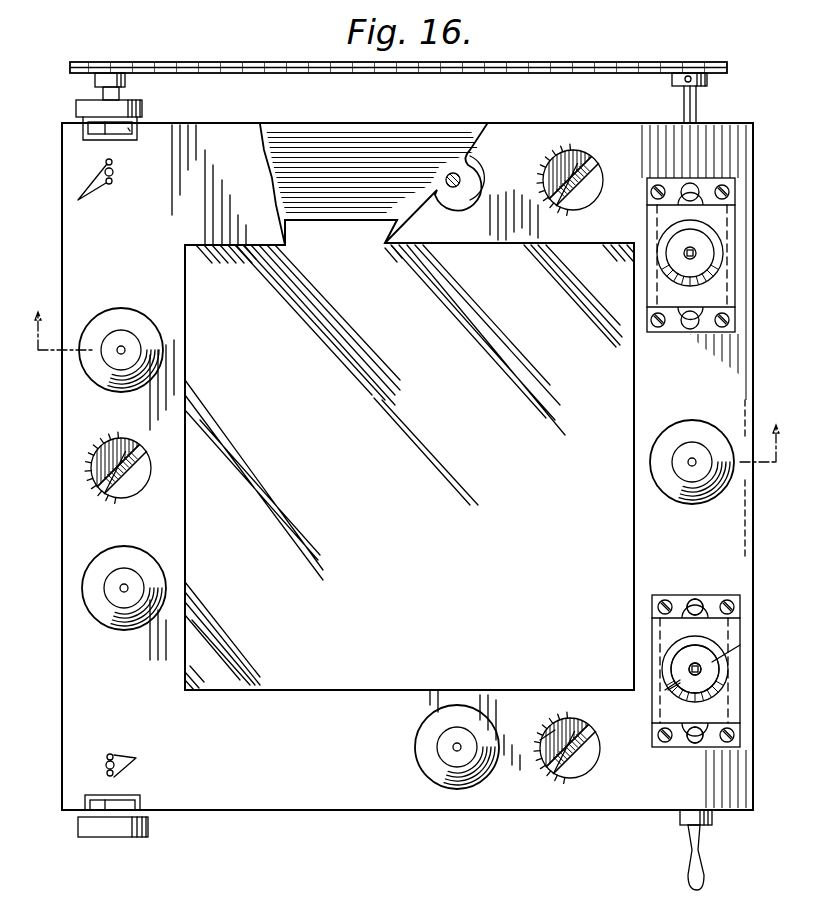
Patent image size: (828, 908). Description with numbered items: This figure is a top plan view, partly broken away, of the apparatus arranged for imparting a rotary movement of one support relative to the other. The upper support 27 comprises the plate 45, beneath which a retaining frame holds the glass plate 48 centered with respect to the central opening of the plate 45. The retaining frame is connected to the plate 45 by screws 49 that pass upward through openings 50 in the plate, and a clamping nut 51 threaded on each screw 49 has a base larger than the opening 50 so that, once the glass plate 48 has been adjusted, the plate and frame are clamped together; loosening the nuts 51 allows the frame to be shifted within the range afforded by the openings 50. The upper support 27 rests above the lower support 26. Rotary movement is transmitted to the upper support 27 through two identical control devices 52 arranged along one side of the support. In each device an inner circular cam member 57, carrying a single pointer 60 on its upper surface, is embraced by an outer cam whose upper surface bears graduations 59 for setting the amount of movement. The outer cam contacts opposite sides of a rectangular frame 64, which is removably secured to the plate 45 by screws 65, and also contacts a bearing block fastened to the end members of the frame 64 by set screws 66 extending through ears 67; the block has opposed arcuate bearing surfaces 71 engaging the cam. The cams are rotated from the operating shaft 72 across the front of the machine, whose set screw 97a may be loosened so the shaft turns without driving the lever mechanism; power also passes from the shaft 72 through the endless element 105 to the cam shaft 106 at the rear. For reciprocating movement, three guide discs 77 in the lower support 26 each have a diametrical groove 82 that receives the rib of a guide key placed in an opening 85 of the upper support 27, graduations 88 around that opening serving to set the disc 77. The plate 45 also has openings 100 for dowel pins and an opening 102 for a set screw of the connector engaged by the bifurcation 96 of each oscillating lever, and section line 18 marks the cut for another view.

The endless element 105 is at (572, 62).
The cam shaft 106 is at (132, 82).
The bifurcation 96 is at (135, 128).
The opening 102 is at (114, 176).
The openings 100 is at (128, 470).
The lower support 26 is at (377, 119).
The upper support 27 is at (520, 137).
The glass plate 48 is at (350, 240).
The screws 49 is at (455, 188).
The openings 50 is at (472, 184).
The groove 82 is at (128, 440).
The guide disc 77 is at (140, 488).
The opening 85 is at (125, 500).
The operating shaft 72 is at (684, 100).
The set screw 97a is at (708, 80).
The control devices 52 is at (642, 283).
The clamping nut 51 is at (135, 318).
The section line 18 is at (403, 403).
The inner circular cam member 57 is at (688, 648).
The graduations 59 is at (672, 673).
The pointer 60 is at (700, 682).
The rectangular frame 64 is at (670, 690).
The screws 65 is at (663, 600).
The set screws 66 is at (696, 599).
The ears 67 is at (695, 747).
The arcuate bearing surfaces 71 is at (716, 655).
The graduations 88 is at (552, 760).
The plate 45 is at (218, 812).